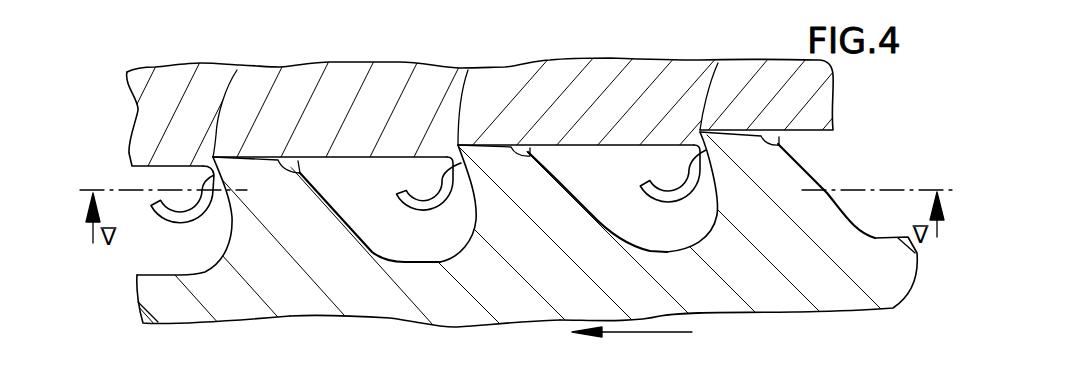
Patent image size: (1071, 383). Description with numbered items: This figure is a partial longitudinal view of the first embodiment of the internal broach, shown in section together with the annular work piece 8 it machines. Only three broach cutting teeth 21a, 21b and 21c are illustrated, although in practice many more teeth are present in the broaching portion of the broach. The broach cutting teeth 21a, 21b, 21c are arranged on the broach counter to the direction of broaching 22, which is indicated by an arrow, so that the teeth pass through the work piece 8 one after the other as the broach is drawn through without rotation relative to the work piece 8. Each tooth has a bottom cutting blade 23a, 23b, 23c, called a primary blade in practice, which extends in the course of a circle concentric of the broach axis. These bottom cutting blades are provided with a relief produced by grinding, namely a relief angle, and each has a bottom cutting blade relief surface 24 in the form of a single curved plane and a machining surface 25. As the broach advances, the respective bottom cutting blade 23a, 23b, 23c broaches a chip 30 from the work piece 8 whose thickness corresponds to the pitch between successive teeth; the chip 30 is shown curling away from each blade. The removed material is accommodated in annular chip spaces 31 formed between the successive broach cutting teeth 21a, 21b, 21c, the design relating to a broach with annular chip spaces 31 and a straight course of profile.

The work piece 8 is at (797, 103).
The broach cutting tooth 21a is at (263, 188).
The broach cutting tooth 21b is at (498, 185).
The broach cutting tooth 21c is at (748, 173).
The direction of broaching 22 is at (648, 335).
The bottom cutting blade 23a is at (237, 70).
The bottom cutting blade 23b is at (468, 70).
The bottom cutting blade 23c is at (718, 63).
The bottom cutting blade relief surface 24 is at (296, 168).
The machining surface 25 is at (228, 218).
The chip 30 is at (165, 214).
The annular chip space 31 is at (402, 247).